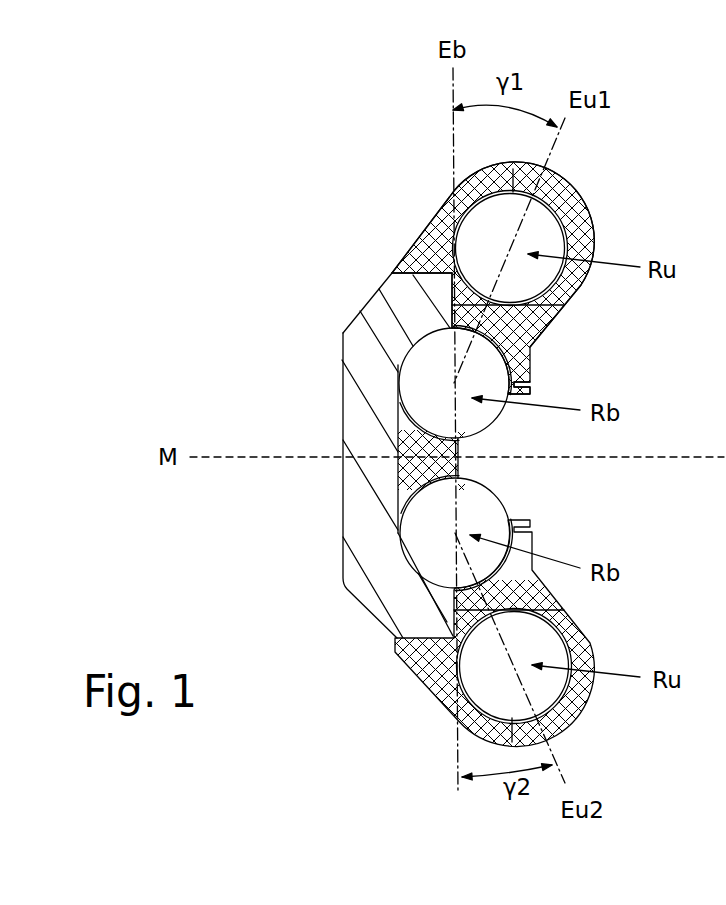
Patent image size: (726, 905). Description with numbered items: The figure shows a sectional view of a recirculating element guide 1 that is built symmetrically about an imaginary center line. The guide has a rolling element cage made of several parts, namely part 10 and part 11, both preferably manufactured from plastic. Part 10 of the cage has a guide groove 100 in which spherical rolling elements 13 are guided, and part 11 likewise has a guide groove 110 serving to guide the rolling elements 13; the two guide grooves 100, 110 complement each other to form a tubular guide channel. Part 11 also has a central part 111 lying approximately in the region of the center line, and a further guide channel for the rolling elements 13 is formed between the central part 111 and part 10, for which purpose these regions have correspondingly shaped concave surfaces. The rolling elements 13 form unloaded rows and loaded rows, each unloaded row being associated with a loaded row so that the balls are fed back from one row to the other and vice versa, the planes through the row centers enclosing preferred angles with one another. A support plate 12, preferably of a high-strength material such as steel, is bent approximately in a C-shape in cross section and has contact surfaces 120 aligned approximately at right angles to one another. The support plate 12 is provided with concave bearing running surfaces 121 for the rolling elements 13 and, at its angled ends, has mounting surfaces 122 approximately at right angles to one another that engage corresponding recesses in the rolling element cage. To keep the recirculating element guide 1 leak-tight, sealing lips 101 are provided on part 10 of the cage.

The recirculating element guide 1 is at (220, 147).
The part of the rolling element cage 10 is at (592, 235).
The guide groove 100 is at (570, 220).
The sealing lips 101 is at (532, 392).
The part of the rolling element cage 11 is at (418, 220).
The guide groove 110 is at (463, 203).
The central part 111 is at (408, 468).
The support plate 12 is at (355, 423).
The contact surfaces 120 is at (367, 301).
The concave bearing running surfaces 121 is at (410, 368).
The mounting surfaces 122 is at (450, 292).
The spherical rolling elements 13 is at (477, 418).